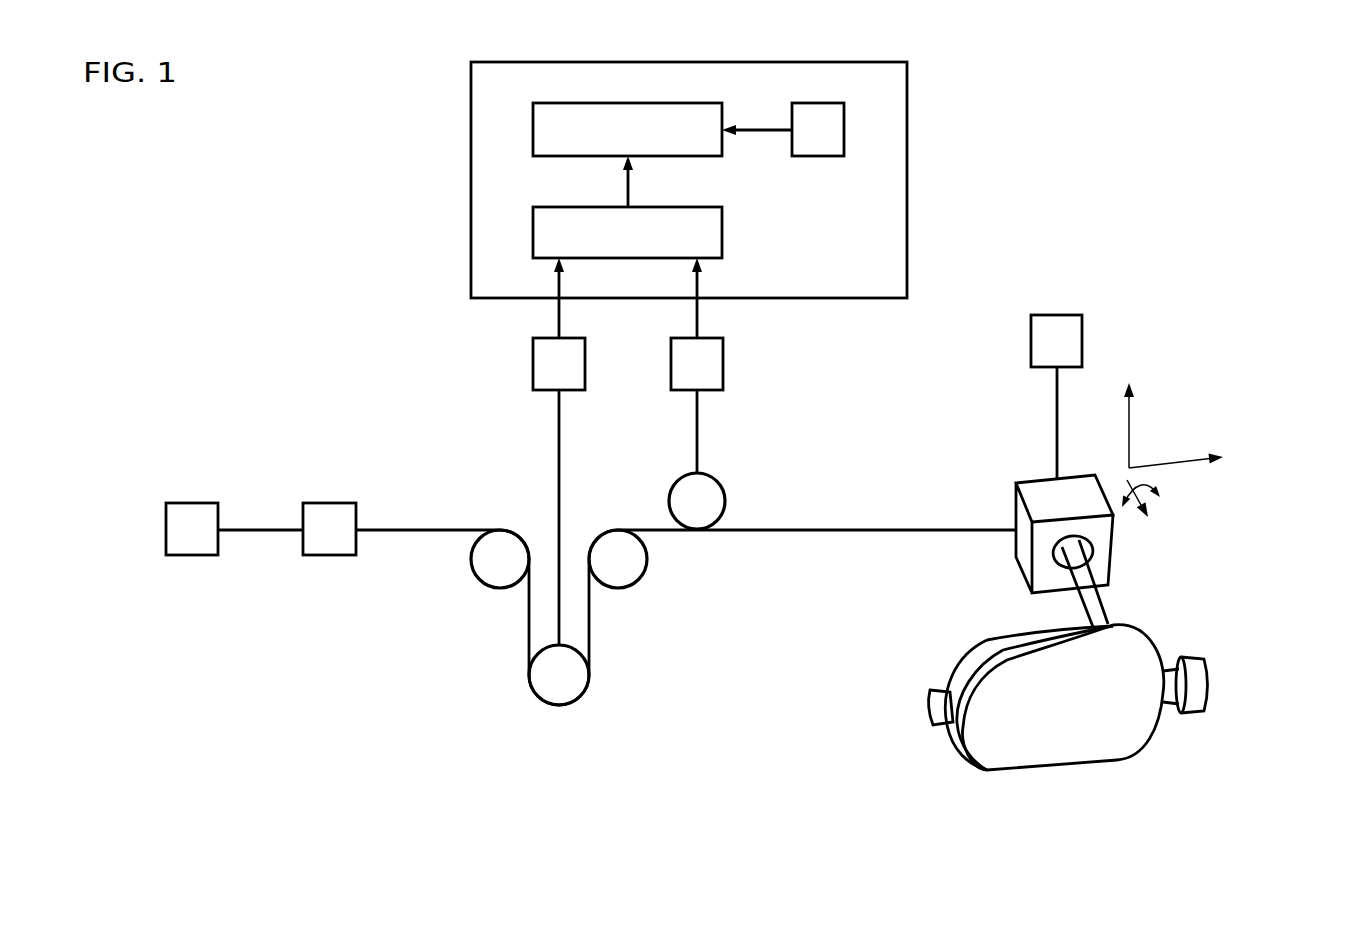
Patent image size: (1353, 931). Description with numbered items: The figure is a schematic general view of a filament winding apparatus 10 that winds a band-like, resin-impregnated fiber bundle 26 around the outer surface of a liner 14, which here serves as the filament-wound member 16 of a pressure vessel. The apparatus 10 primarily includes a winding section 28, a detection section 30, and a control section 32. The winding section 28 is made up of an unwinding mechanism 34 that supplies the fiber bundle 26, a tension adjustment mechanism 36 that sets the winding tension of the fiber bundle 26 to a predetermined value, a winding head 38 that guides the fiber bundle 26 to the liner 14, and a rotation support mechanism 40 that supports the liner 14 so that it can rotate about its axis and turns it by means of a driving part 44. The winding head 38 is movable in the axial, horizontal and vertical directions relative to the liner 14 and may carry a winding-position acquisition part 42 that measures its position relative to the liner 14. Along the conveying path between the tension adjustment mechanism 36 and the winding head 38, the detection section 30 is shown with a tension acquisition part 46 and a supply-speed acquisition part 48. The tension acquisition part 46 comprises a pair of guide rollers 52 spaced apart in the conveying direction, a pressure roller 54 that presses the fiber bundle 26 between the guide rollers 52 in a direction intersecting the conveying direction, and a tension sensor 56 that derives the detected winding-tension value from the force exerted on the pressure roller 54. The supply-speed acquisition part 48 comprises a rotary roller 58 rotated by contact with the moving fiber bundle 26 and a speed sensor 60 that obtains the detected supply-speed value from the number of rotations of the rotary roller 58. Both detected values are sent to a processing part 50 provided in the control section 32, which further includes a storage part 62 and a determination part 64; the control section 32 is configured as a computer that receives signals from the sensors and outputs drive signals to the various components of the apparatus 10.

The filament winding apparatus 10 is at (172, 139).
The liner 14 is at (1137, 737).
The filament-wound member 16 is at (1046, 697).
The fiber bundle 26 is at (433, 528).
The winding section 28 is at (743, 531).
The detection section 30 is at (624, 737).
The control section 32 is at (907, 85).
The unwinding mechanism 34 is at (199, 502).
The tension adjustment mechanism 36 is at (337, 502).
The winding head 38 is at (1029, 477).
The rotation support mechanism 40 is at (1182, 615).
The winding-position acquisition part 42 is at (1063, 312).
The driving part 44 is at (1205, 687).
The tension acquisition part 46 is at (542, 725).
The supply-speed acquisition part 48 is at (796, 337).
The processing part 50 is at (533, 215).
The guide rollers 52 is at (472, 568).
The pressure roller 54 is at (545, 678).
The tension sensor 56 is at (533, 350).
The rotary roller 58 is at (722, 485).
The speed sensor 60 is at (723, 352).
The storage part 62 is at (844, 117).
The determination part 64 is at (533, 115).